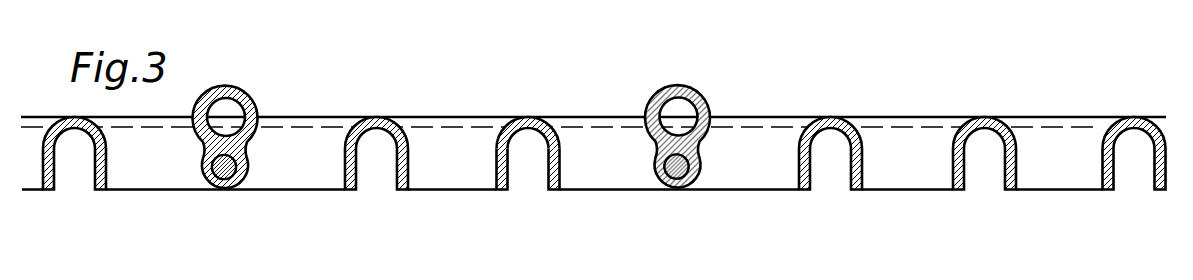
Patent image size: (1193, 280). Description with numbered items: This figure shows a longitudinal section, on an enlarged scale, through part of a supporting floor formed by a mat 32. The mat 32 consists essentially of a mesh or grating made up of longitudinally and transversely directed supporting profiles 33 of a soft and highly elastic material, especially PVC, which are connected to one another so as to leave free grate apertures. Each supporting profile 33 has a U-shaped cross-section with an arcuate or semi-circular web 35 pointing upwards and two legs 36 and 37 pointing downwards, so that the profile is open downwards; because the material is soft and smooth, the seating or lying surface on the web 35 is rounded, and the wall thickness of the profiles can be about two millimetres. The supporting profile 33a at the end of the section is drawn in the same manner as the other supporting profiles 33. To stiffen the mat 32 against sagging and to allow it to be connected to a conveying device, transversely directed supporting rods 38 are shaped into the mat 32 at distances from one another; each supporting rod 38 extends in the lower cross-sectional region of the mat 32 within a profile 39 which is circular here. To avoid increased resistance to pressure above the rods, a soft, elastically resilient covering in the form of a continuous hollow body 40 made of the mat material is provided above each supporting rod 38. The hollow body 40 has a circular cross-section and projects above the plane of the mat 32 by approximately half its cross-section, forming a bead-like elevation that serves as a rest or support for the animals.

The mat 32 is at (462, 117).
The supporting profile 33 is at (977, 115).
The end loop 33a is at (1140, 198).
The web 35 is at (530, 118).
The leg 36 is at (510, 177).
The leg 37 is at (543, 178).
The supporting rod 38 is at (237, 177).
The profile 39 is at (215, 180).
The hollow body 40 is at (680, 110).